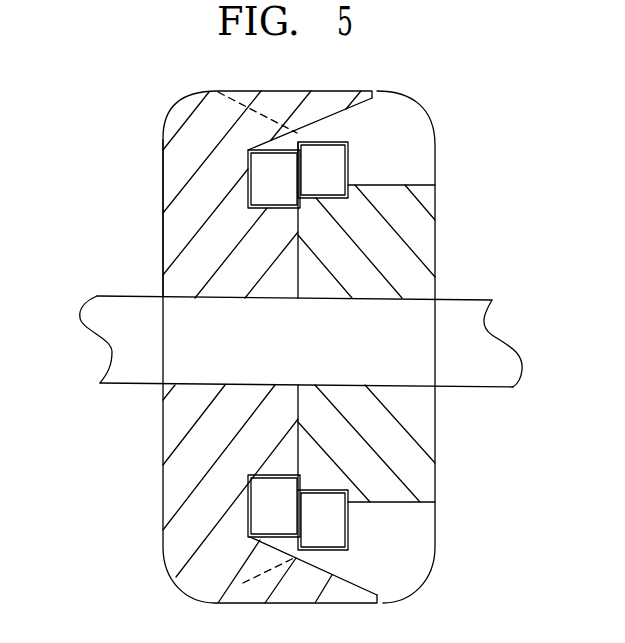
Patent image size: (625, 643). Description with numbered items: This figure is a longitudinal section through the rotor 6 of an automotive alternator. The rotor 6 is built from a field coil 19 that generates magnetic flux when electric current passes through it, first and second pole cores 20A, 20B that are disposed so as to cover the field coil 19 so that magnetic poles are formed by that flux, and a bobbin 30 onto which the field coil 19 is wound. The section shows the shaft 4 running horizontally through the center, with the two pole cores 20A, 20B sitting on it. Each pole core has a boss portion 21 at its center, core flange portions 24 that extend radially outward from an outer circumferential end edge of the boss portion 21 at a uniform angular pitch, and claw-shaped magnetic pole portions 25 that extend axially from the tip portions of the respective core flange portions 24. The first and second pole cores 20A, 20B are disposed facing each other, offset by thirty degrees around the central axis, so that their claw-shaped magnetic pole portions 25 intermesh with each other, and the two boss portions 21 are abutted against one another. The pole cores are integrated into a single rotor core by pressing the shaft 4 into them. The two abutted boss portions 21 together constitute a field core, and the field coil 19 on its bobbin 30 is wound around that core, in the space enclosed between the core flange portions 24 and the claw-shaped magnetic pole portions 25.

The rotor 6 is at (97, 61).
The shaft 4 is at (100, 309).
The first pole core 20A is at (436, 147).
The second pole core 20B is at (161, 150).
The field coil 19 is at (348, 157).
The bobbin 30 is at (330, 150).
The boss portion 21 is at (253, 437).
The core flange portions 24 is at (207, 517).
The claw-shaped magnetic pole portions 25 is at (290, 583).